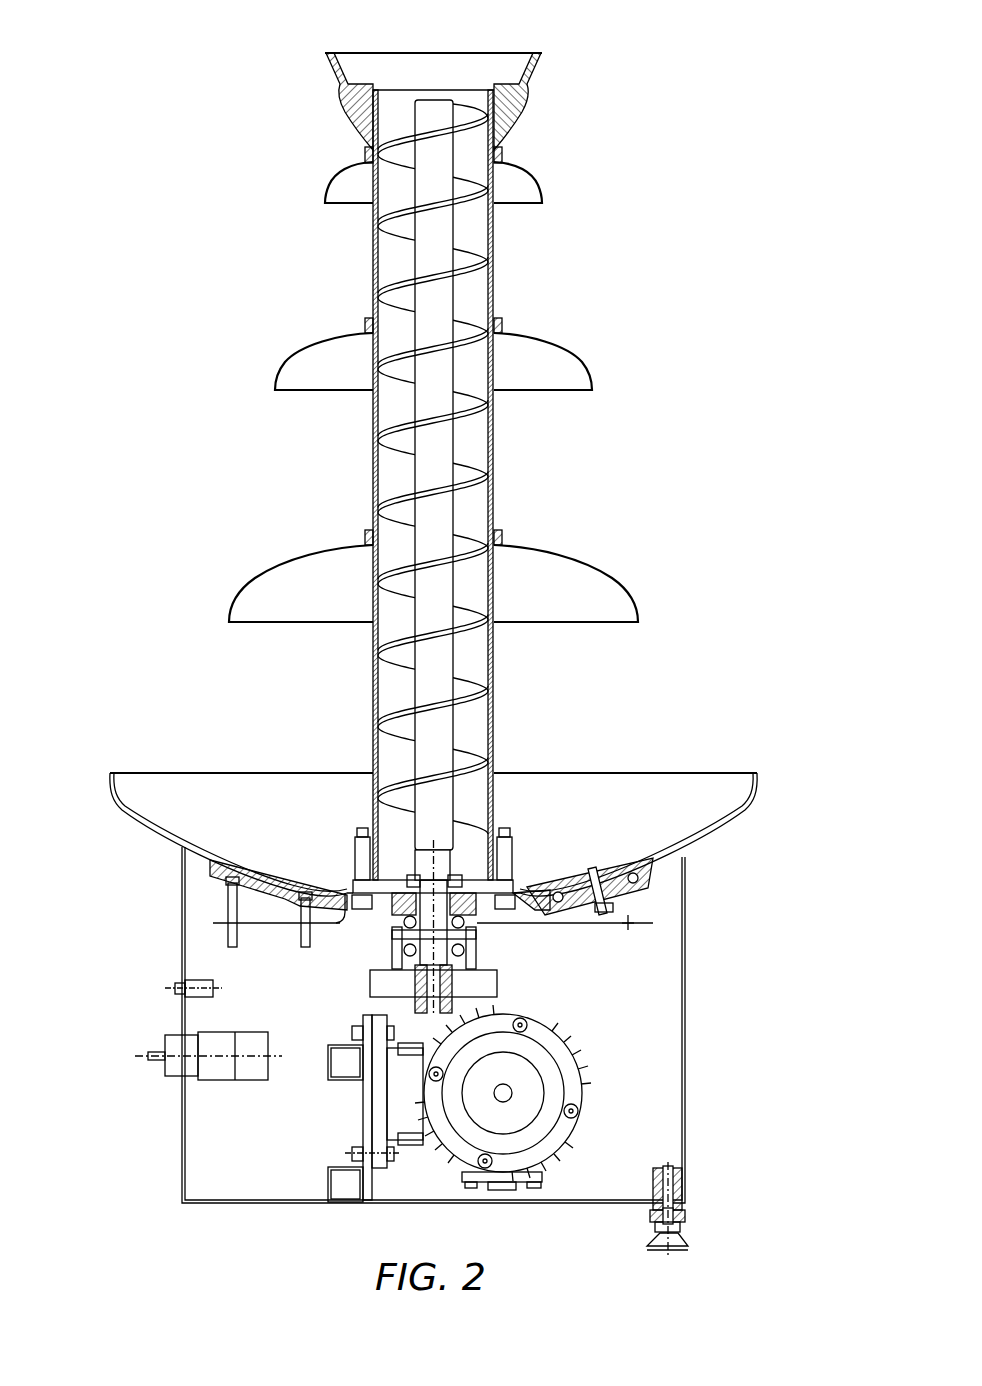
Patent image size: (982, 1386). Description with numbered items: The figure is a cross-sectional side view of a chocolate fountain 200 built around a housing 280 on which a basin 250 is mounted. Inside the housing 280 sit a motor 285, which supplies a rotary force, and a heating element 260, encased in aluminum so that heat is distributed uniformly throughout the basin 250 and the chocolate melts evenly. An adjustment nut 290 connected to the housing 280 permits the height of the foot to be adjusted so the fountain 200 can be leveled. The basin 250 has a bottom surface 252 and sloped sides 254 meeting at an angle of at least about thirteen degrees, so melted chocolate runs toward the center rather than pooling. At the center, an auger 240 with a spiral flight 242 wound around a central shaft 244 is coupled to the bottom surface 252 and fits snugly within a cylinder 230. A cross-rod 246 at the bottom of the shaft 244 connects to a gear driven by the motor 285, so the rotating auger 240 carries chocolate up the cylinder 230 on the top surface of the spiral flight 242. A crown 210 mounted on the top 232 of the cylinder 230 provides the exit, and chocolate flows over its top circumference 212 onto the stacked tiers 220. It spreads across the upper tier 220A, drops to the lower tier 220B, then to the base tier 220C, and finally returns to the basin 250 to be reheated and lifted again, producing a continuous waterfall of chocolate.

The chocolate fountain 200 is at (718, 130).
The crown 210 is at (528, 102).
The top circumference 212 is at (328, 54).
The tiers 220 is at (278, 560).
The upper tier 220A is at (537, 177).
The lower tier 220B is at (550, 347).
The base tier 220C is at (580, 563).
The cylinder 230 is at (497, 290).
The top 232 is at (357, 115).
The auger 240 is at (472, 417).
The spiral flight 242 is at (403, 372).
The central shaft 244 is at (452, 733).
The cross-rod 246 is at (413, 873).
The basin 250 is at (677, 769).
The bottom surface 252 is at (468, 897).
The sides 254 is at (160, 830).
The heating element 260 is at (653, 877).
The housing 280 is at (687, 1033).
The motor 285 is at (527, 1097).
The adjustment nut 290 is at (685, 1212).